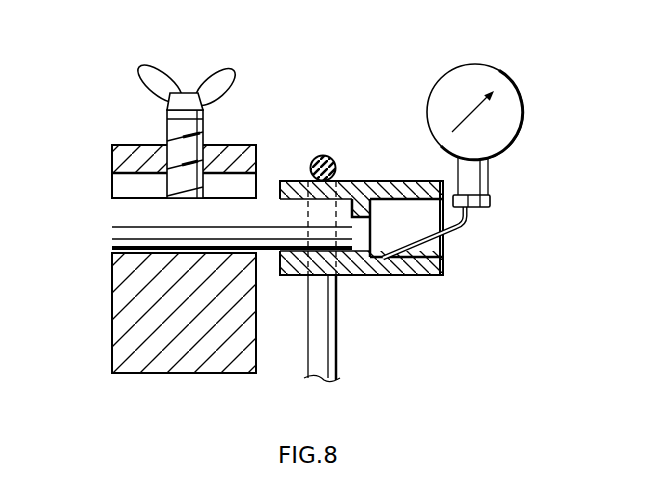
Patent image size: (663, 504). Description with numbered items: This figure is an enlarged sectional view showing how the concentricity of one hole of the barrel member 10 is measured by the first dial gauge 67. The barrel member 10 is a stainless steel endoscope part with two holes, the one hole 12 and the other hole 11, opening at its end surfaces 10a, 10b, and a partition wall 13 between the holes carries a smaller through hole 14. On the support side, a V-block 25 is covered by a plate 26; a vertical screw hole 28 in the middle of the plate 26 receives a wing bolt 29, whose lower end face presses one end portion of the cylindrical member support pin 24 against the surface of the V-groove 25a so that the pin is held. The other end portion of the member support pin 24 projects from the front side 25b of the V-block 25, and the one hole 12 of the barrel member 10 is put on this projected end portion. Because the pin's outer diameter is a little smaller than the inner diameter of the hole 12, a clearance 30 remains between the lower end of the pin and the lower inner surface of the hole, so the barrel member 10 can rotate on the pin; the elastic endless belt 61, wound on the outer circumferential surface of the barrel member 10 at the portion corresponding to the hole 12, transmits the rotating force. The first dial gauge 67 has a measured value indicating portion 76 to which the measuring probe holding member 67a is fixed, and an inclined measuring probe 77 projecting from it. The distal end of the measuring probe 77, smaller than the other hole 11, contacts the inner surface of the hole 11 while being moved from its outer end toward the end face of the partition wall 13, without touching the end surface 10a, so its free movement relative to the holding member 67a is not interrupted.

The barrel member 10 is at (417, 277).
The end surface 10a is at (449, 248).
The end surface 10b is at (280, 260).
The hole 11 is at (423, 207).
The hole 12 is at (347, 192).
The partition wall 13 is at (393, 190).
The through hole 14 is at (366, 284).
The cylindrical member support pin 24 is at (122, 233).
The V-block 25 is at (125, 290).
The V-groove 25a is at (168, 252).
The front side 25b is at (258, 181).
The plate 26 is at (235, 146).
The screw hole 28 is at (178, 147).
The wing bolt 29 is at (158, 83).
The clearance 30 is at (366, 250).
The elastic endless belt 61 is at (325, 357).
The first dial gauge 67 is at (500, 60).
The measuring probe holding member 67a is at (492, 203).
The measured value indicating portion 76 is at (517, 90).
The measuring probe 77 is at (447, 277).